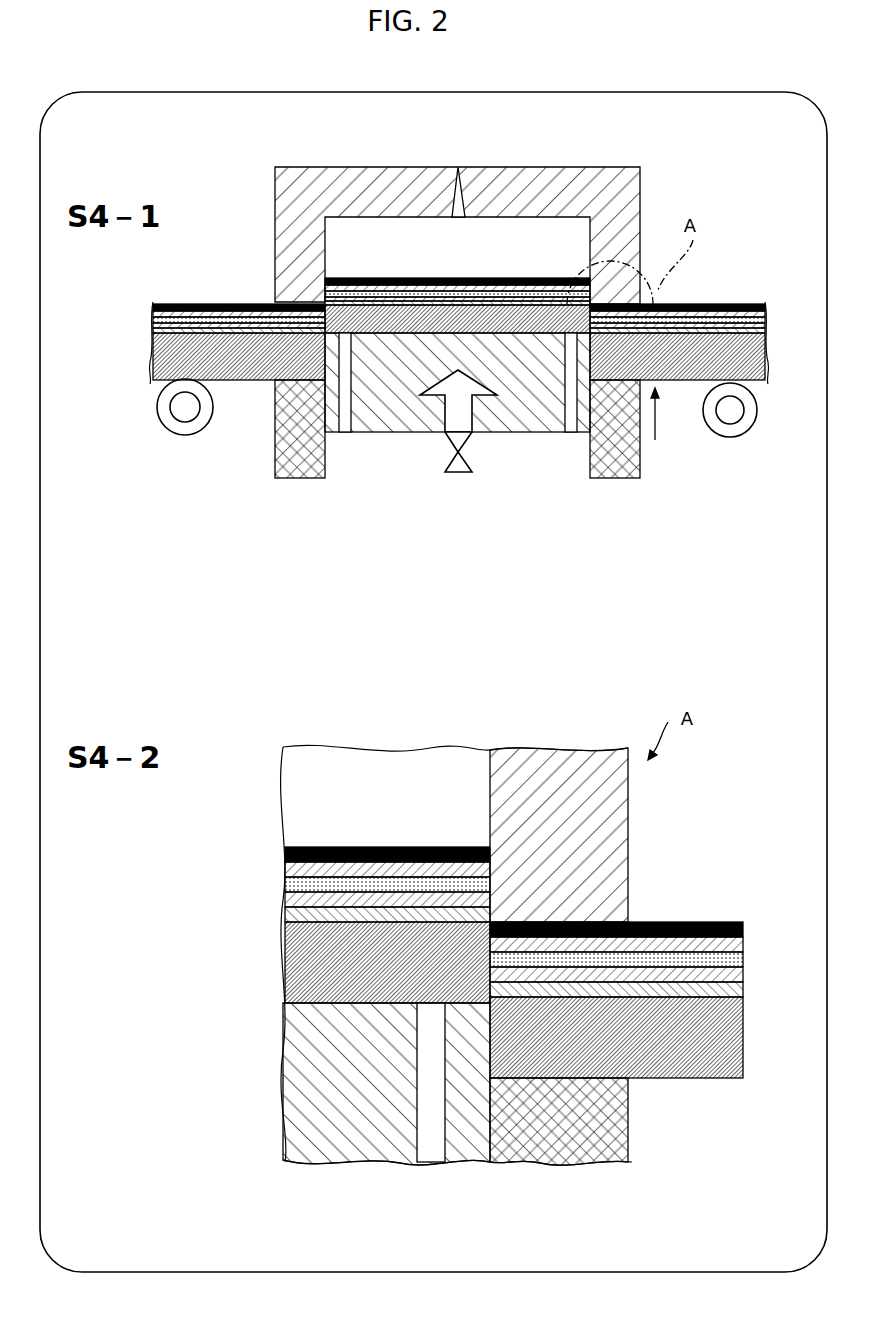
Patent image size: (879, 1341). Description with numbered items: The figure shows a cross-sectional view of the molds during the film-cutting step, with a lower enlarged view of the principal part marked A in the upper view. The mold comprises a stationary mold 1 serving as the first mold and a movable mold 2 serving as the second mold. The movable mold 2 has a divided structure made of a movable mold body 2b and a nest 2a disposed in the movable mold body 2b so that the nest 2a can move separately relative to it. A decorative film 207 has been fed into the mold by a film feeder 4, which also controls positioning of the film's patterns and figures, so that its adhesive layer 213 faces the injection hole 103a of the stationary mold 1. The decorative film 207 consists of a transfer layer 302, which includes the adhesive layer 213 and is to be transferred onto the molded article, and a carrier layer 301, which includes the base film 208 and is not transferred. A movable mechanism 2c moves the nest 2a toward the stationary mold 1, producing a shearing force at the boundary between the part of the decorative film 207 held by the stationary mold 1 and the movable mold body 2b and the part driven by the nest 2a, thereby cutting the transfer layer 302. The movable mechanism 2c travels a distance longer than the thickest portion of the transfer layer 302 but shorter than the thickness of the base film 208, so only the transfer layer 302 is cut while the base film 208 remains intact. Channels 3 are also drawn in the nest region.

The stationary mold 1 is at (640, 192).
The injection hole 103a is at (455, 200).
The decorative film 207 is at (730, 303).
The movable mold 2 is at (640, 512).
The nest 2a is at (395, 418).
The movable mold body 2b is at (302, 475).
The movable mechanism 2c is at (472, 455).
The suction channel 3 is at (344, 425).
The film feeder 4 is at (183, 435).
The adhesive layer 213 is at (300, 855).
The transfer layer 302 is at (283, 847).
The carrier layer 301 is at (500, 1020).
The base film 208 is at (318, 985).